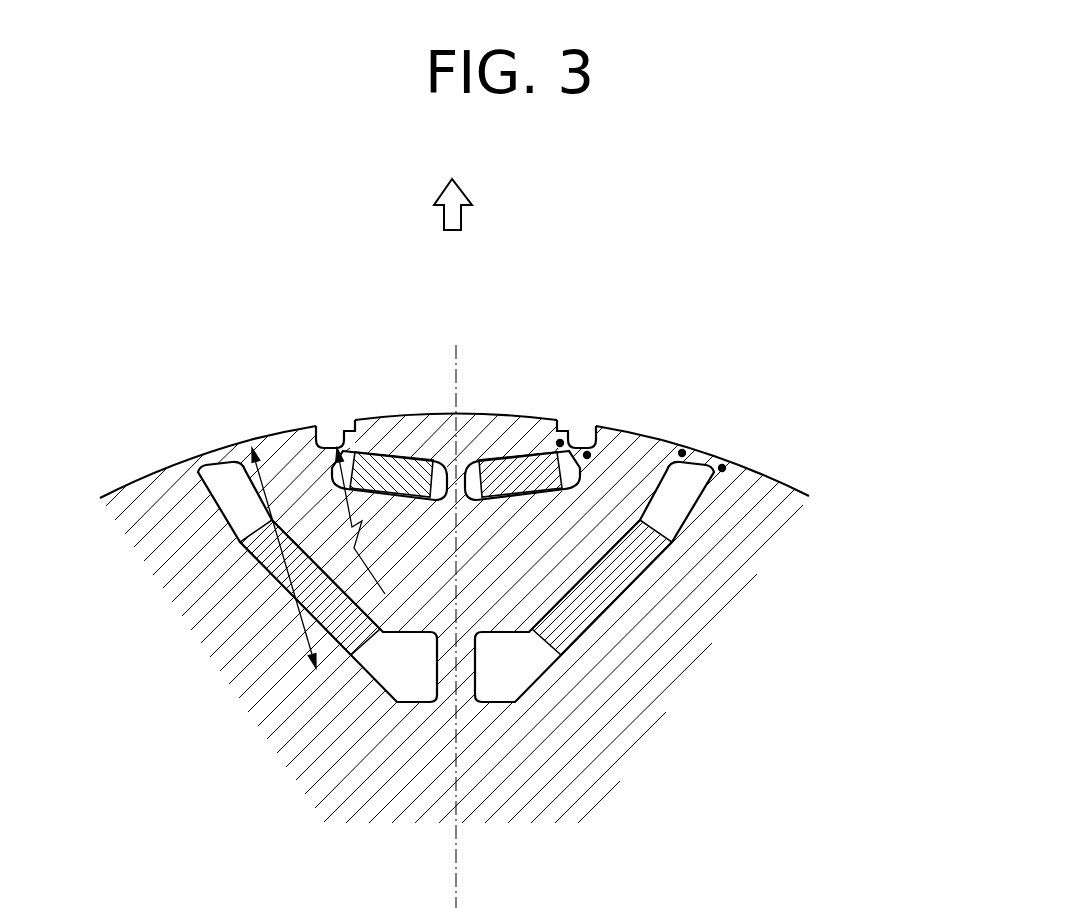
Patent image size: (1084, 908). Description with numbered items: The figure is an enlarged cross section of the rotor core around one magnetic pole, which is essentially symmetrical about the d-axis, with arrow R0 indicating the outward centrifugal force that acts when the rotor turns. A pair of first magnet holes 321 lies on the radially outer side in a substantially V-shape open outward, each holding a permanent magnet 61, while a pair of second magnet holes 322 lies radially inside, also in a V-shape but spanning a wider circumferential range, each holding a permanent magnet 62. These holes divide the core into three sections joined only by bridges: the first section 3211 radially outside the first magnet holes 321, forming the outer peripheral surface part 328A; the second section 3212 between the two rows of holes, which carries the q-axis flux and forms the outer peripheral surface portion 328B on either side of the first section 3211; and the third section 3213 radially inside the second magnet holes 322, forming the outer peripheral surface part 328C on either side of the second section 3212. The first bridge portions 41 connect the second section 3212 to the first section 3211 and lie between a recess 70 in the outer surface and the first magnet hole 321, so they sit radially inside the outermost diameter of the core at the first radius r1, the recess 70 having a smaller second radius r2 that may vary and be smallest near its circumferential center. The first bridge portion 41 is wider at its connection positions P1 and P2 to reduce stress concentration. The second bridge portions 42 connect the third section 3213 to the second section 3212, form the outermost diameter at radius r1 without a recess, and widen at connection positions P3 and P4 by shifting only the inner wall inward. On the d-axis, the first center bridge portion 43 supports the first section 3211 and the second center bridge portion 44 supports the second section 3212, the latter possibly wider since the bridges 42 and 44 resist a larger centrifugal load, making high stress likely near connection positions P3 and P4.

The part of the outer peripheral surface 328A is at (455, 412).
The outer peripheral surface portion of the second section 328B is at (322, 424).
The part of the outer peripheral surface 328C is at (138, 475).
The recess 70 is at (322, 412).
The second bridge portion 42 is at (218, 462).
The first bridge portion 41 is at (341, 450).
The permanent magnet 61 is at (393, 468).
The permanent magnet 62 is at (278, 580).
The first center bridge portion 43 is at (466, 470).
The second center bridge portion 44 is at (398, 704).
The first magnet hole 321 is at (332, 480).
The second magnet hole 322 is at (248, 478).
The first section 3211 is at (447, 448).
The second section 3212 is at (447, 569).
The third section 3213 is at (445, 809).
The connection position P1 is at (560, 440).
The connection position P2 is at (590, 452).
The connection position P3 is at (682, 450).
The connection position P4 is at (725, 466).
The first radius r1 is at (284, 574).
The second radius r2 is at (356, 521).
The arrow indicating centrifugal force R0 is at (453, 215).
The element d-axis is at (458, 888).